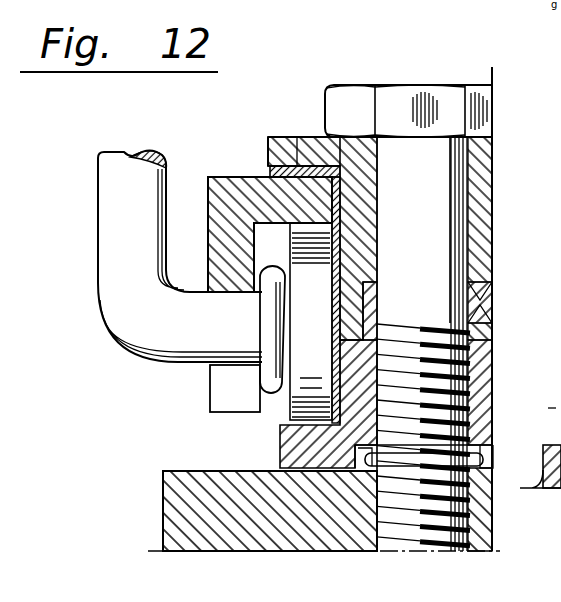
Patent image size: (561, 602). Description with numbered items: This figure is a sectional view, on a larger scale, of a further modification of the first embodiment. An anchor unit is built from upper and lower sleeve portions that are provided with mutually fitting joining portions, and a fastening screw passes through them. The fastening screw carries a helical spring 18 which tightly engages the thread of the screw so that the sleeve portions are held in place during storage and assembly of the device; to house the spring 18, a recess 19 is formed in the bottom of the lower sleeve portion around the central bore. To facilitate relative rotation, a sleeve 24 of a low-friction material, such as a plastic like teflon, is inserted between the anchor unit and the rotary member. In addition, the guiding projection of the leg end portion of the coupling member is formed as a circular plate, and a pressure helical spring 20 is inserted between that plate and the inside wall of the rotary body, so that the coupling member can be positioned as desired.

The helical spring 18 is at (493, 442).
The recess 19 is at (357, 462).
The pressure helical spring 20 is at (266, 340).
The sleeve 24 is at (300, 168).